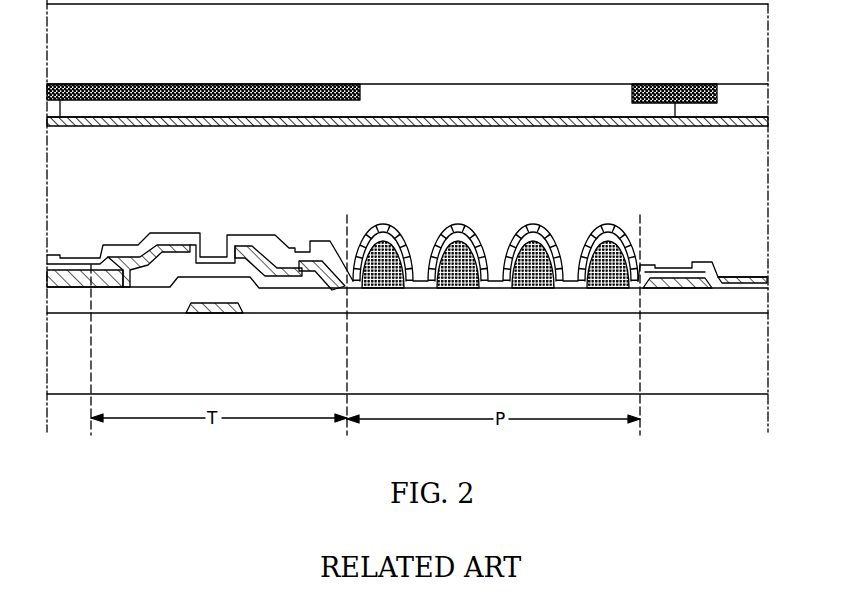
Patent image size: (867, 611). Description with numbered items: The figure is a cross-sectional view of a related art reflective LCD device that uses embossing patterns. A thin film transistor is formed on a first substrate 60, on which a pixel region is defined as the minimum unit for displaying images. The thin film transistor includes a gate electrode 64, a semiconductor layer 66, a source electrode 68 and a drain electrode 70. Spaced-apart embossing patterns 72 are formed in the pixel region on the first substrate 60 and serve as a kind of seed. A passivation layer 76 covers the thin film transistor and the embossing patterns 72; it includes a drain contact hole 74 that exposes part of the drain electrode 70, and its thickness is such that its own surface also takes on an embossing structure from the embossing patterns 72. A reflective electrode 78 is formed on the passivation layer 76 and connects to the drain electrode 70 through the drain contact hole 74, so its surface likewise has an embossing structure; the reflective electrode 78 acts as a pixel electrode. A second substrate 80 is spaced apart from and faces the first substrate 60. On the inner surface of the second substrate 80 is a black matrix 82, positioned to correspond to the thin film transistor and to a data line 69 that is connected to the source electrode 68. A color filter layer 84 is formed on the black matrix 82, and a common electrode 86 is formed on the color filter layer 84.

The first substrate 60 is at (80, 359).
The gate electrode 64 is at (218, 313).
The semiconductor layer 66 is at (134, 283).
The source electrode 68 is at (172, 251).
The data line 69 is at (80, 270).
The drain electrode 70 is at (246, 252).
The embossing patterns 72 is at (384, 234).
The drain contact hole 74 is at (307, 235).
The passivation layer 76 is at (117, 248).
The reflective electrode 78 is at (58, 254).
The second substrate 80 is at (87, 56).
The black matrix 82 is at (237, 82).
The color filter layer 84 is at (765, 106).
The common electrode 86 is at (736, 127).